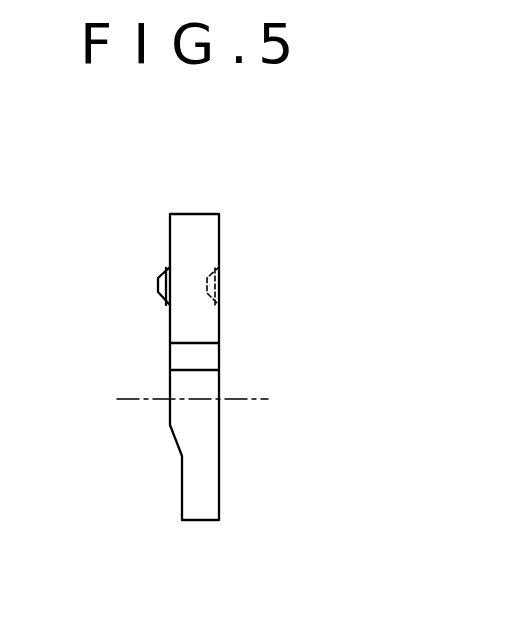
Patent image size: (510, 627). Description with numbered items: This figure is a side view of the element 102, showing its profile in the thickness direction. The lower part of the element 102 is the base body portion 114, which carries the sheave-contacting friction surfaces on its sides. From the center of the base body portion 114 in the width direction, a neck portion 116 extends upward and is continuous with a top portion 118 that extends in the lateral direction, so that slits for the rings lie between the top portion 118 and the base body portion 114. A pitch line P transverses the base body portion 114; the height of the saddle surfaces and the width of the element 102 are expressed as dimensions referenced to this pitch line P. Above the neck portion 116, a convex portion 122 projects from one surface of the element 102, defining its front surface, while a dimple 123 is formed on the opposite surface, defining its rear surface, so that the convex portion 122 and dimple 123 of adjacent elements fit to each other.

The element 102 is at (195, 213).
The base body portion 114 is at (207, 503).
The neck portion 116 is at (208, 355).
The top portion 118 is at (208, 248).
The convex portion 122 is at (157, 285).
The dimple 123 is at (219, 290).
The pitch line P is at (240, 400).